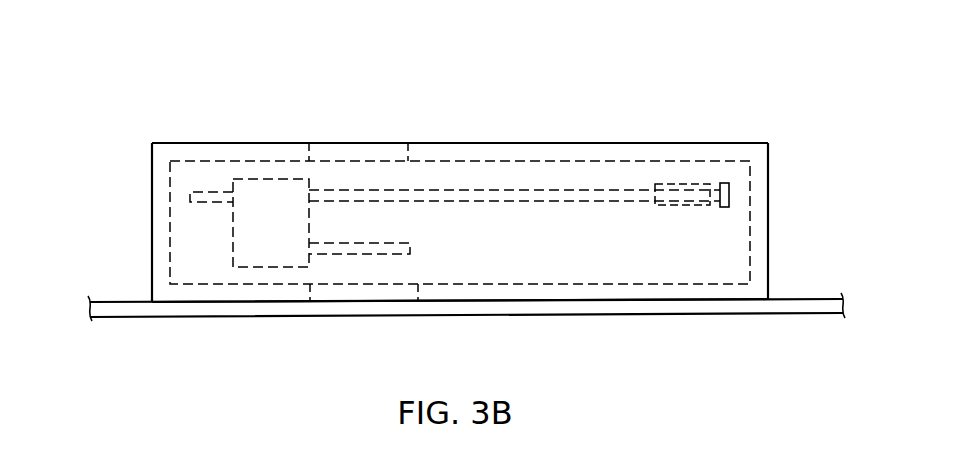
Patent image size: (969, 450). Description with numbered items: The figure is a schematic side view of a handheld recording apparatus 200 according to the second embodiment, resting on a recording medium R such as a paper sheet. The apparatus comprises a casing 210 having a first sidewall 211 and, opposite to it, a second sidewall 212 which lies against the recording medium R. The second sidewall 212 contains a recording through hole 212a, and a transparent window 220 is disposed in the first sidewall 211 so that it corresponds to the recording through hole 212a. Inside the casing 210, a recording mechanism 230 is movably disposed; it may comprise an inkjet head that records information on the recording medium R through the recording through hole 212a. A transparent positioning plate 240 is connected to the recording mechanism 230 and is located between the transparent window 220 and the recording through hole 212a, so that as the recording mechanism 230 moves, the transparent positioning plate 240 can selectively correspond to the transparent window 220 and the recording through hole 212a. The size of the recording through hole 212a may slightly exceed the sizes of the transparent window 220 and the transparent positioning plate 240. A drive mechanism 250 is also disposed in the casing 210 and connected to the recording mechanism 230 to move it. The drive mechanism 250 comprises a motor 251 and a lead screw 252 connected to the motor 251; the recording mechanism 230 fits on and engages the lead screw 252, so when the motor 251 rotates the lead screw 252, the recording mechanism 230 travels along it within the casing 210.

The handheld recording apparatus 200 is at (207, 121).
The casing 210 is at (150, 180).
The first sidewall 211 is at (258, 143).
The second sidewall 212 is at (228, 303).
The recording through hole 212a is at (396, 292).
The transparent window 220 is at (361, 153).
The recording mechanism 230 is at (240, 222).
The transparent positioning plate 240 is at (340, 255).
The drive mechanism 250 is at (733, 195).
The motor 251 is at (681, 184).
The lead screw 252 is at (465, 190).
The recording medium R is at (805, 299).